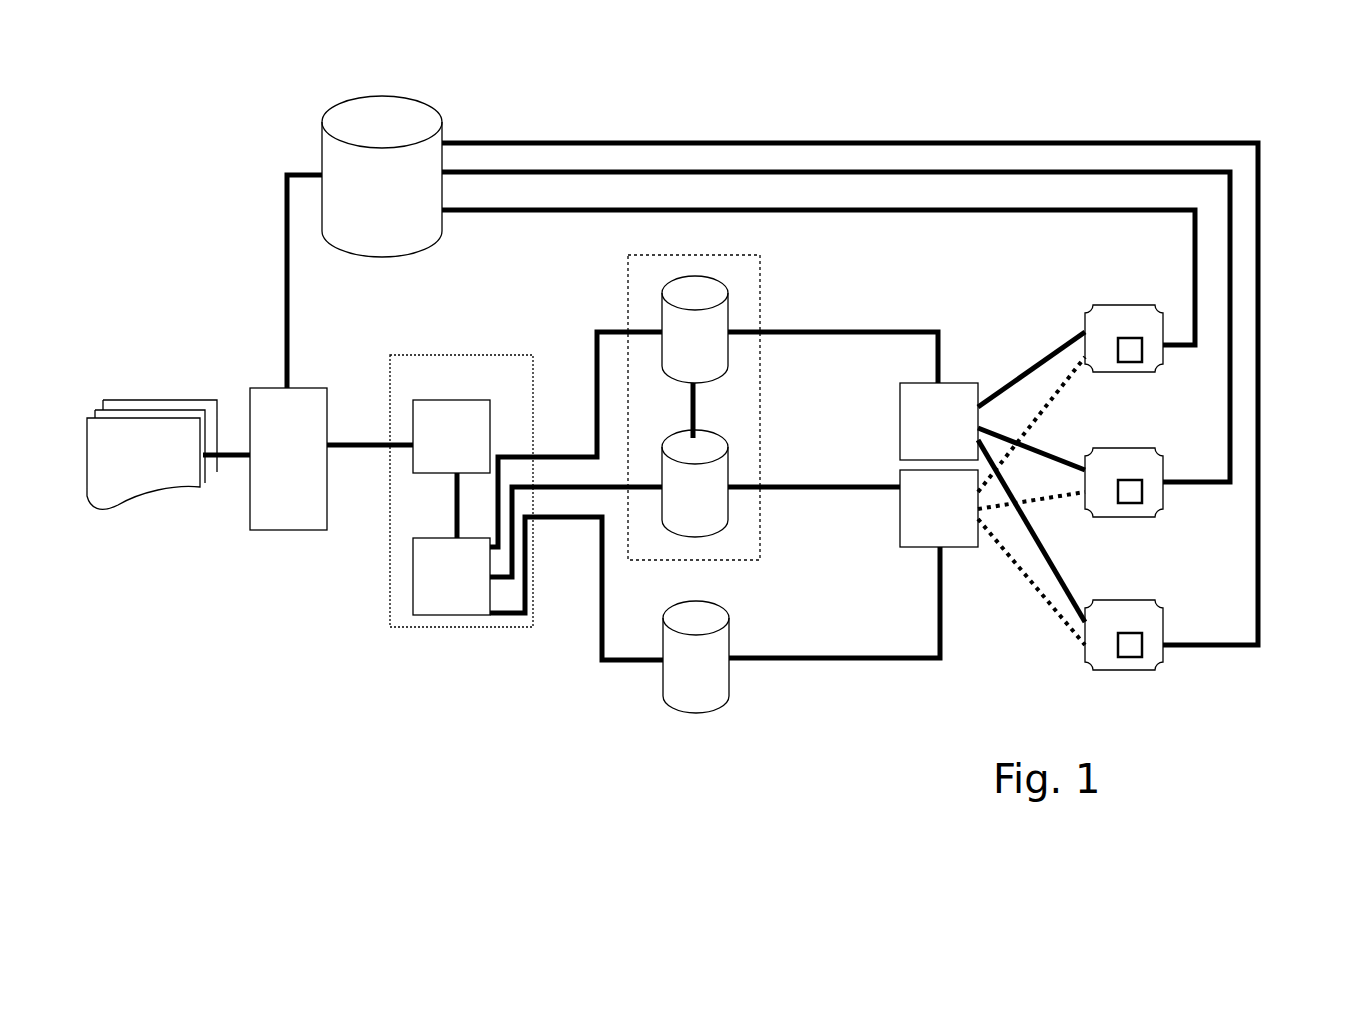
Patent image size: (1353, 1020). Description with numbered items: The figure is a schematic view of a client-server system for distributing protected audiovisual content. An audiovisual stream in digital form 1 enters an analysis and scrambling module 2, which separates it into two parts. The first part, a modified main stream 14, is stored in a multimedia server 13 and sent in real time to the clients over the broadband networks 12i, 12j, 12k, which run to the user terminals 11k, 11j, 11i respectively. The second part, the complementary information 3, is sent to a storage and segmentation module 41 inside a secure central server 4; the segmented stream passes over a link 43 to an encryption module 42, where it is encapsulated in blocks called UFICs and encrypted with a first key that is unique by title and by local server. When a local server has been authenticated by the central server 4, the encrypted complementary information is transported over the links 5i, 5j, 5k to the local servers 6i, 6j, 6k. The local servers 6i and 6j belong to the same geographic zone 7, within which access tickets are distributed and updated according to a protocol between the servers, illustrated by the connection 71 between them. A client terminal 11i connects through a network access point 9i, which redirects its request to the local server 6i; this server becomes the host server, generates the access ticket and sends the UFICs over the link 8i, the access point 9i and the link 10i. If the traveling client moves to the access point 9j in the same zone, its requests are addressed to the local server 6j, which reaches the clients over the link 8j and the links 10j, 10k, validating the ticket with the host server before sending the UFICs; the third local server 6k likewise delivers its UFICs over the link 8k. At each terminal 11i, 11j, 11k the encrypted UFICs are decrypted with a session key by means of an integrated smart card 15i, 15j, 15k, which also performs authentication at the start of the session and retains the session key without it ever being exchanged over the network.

The audiovisual stream in digital form 1 is at (152, 400).
The analysis and scrambling module 2 is at (272, 530).
The complementary information 3 is at (348, 440).
The secure central server 4 is at (445, 355).
The storage and segmentation module 41 is at (412, 450).
The encryption module 42 is at (413, 598).
The link 43 is at (454, 506).
The link 5i is at (552, 453).
The link 5j is at (587, 489).
The link 5k is at (633, 662).
The local server 6i is at (725, 292).
The local server 6j is at (725, 442).
The local server 6k is at (728, 617).
The geographic zone 7 is at (757, 308).
The link between local servers 71 is at (700, 405).
The link 8i is at (872, 330).
The link 8j is at (827, 489).
The link 8k is at (872, 663).
The network access point 9i is at (970, 383).
The network access point 9j is at (970, 547).
The link 10i is at (1041, 355).
The link 10j is at (1064, 459).
The link 10k is at (1043, 551).
The terminal of the user 11i is at (1206, 309).
The terminal of the user 11j is at (1206, 448).
The terminal of the user 11k is at (1208, 600).
The broadband network 12i is at (780, 140).
The broadband network 12j is at (898, 167).
The broadband network 12k is at (1022, 207).
The multimedia server 13 is at (410, 95).
The modified main stream 14 is at (280, 260).
The smart card 15i is at (1130, 350).
The smart card 15j is at (1130, 490).
The smart card 15k is at (1140, 645).